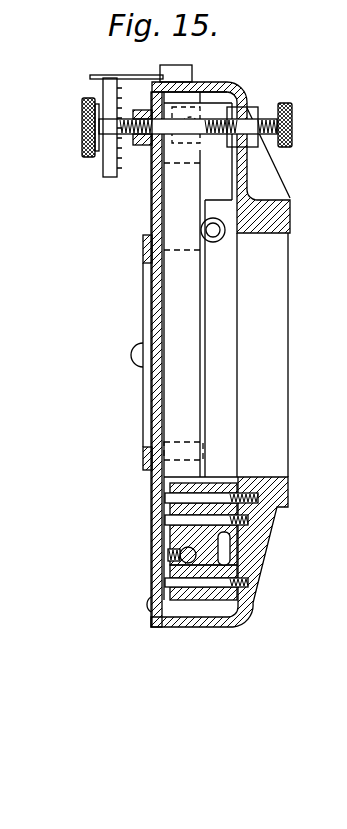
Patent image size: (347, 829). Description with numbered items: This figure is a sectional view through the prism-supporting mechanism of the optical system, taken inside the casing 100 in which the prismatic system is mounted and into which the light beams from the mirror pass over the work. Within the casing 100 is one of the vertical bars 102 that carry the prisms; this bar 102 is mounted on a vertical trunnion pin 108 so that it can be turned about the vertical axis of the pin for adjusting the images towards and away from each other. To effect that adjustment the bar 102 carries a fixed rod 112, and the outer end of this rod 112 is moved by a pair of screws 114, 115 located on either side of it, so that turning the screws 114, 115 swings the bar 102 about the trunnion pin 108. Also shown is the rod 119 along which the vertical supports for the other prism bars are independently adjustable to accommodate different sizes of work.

The casing 100 is at (270, 217).
The vertical bar 102 is at (199, 108).
The vertical trunnion pin 108 is at (152, 160).
The fixed rod 112 is at (240, 88).
The screw 114 is at (87, 140).
The screw 115 is at (287, 104).
The rod 119 is at (180, 551).